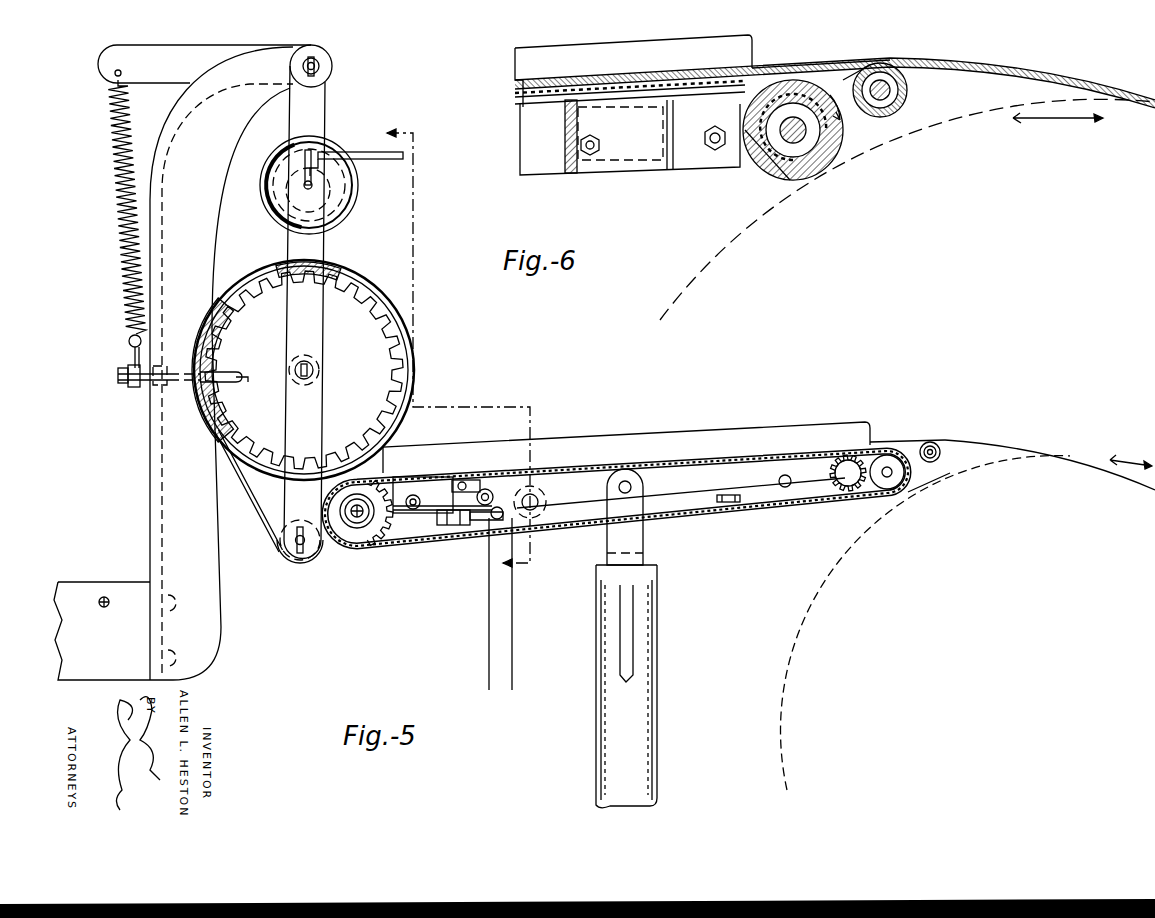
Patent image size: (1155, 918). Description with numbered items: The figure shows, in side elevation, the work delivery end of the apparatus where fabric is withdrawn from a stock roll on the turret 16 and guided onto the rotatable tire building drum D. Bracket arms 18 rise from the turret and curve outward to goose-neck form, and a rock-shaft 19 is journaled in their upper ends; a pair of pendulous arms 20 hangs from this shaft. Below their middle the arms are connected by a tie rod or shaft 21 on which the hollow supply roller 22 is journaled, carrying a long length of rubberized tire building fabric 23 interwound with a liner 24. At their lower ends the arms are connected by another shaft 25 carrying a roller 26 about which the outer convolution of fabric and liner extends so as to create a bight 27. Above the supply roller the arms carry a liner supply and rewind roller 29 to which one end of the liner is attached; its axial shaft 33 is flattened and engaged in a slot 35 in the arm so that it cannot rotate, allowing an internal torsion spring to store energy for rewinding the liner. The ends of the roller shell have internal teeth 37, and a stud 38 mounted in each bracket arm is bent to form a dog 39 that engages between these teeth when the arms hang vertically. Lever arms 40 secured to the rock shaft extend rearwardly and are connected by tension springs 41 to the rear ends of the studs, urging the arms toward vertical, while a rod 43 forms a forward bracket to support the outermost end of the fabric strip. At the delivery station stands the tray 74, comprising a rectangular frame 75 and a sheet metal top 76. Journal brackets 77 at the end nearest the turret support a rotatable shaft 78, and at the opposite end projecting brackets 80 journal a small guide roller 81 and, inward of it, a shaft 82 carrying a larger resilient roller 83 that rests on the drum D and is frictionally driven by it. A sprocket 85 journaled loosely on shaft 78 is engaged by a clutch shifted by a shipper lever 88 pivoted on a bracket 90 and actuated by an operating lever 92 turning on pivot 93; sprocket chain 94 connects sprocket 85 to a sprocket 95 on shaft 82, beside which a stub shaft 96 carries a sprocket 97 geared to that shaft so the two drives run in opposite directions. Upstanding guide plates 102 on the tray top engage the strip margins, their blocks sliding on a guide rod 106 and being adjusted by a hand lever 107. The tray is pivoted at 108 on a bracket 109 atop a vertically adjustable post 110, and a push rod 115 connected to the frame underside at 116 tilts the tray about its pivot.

In FIG. 5, the turret 16 is at (92, 580).
In FIG. 5, the bracket arms 18 is at (170, 490).
In FIG. 5, the rock-shaft 19 is at (320, 67).
In FIG. 5, the pendulous arms 20 is at (328, 113).
In FIG. 5, the tie rod or shaft 21 is at (318, 373).
In FIG. 5, the supply roller 22 is at (373, 353).
In FIG. 5, the tire building fabric 23 is at (1050, 465).
In FIG. 6, the tire building fabric 23 is at (998, 78).
In FIG. 5, the liner 24 is at (322, 262).
In FIG. 5, the tie rod or shaft 25 is at (302, 552).
In FIG. 5, the roller 26 is at (283, 535).
In FIG. 5, the bight 27 is at (253, 518).
In FIG. 5, the liner supply and rewind roller 29 is at (352, 190).
In FIG. 5, the axial shaft 33 is at (303, 192).
In FIG. 5, the slot 35 is at (308, 170).
In FIG. 5, the teeth 37 is at (216, 352).
In FIG. 5, the stud 38 is at (124, 388).
In FIG. 5, the dog 39 is at (242, 385).
In FIG. 5, the lever arms 40 is at (112, 62).
In FIG. 5, the tension springs 41 is at (117, 178).
In FIG. 5, the rod 43 is at (405, 160).
In FIG. 5, the tray 74 is at (748, 430).
In FIG. 6, the tray 74 is at (513, 163).
In FIG. 5, the frame 75 is at (710, 492).
In FIG. 6, the frame 75 is at (560, 170).
In FIG. 6, the sheet metal top 76 is at (527, 108).
In FIG. 5, the journal brackets 77 is at (426, 482).
In FIG. 5, the shaft 78 is at (356, 530).
In FIG. 5, the brackets 80 is at (910, 444).
In FIG. 6, the brackets 80 is at (843, 80).
In FIG. 5, the guide roller 81 is at (938, 447).
In FIG. 6, the guide roller 81 is at (905, 85).
In FIG. 5, the shaft 82 is at (888, 466).
In FIG. 6, the shaft 82 is at (788, 140).
In FIG. 6, the roller 83 is at (757, 165).
In FIG. 5, the sprocket 85 is at (376, 550).
In FIG. 5, the shipper lever 88 is at (431, 514).
In FIG. 5, the bracket 90 is at (453, 527).
In FIG. 5, the operating lever 92 is at (490, 490).
In FIG. 5, the pivot 93 is at (466, 480).
In FIG. 5, the sprocket chain 94 is at (486, 524).
In FIG. 5, the sprocket 95 is at (870, 493).
In FIG. 5, the stub shaft 96 is at (849, 460).
In FIG. 5, the sprocket 97 is at (833, 462).
In FIG. 5, the guide plates 102 is at (688, 440).
In FIG. 6, the guide plates 102 is at (525, 62).
In FIG. 5, the guide rod 106 is at (540, 500).
In FIG. 5, the hand lever 107 is at (748, 505).
In FIG. 5, the pivot 108 is at (625, 480).
In FIG. 5, the bracket 109 is at (650, 555).
In FIG. 5, the post 110 is at (642, 727).
In FIG. 5, the push rod 115 is at (490, 613).
In FIG. 5, the pivotal connection 116 is at (497, 507).
In FIG. 5, the tire building form or drum D is at (797, 600).
In FIG. 6, the tire building form or drum D is at (693, 287).